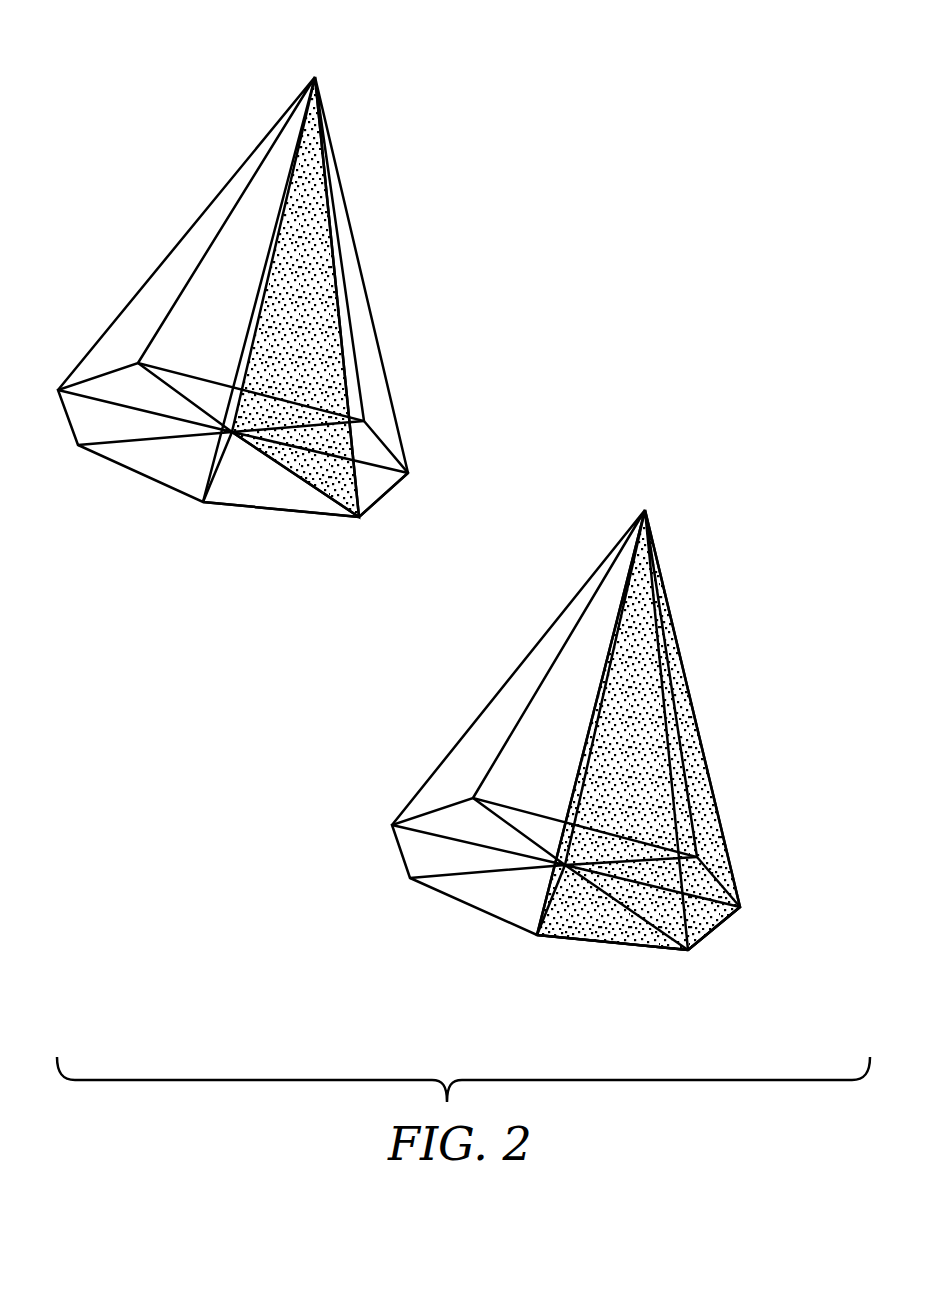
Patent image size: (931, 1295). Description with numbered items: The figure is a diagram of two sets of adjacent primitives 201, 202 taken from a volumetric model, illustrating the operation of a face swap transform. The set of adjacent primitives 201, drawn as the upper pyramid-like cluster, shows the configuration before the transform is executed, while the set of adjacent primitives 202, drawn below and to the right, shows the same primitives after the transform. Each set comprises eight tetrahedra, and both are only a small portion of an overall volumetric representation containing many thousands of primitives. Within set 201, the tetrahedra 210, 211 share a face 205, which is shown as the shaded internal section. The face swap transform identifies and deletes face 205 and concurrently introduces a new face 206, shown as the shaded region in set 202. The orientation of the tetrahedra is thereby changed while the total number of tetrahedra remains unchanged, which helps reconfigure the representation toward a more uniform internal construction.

The set of adjacent primitives 201 is at (227, 134).
The set of adjacent primitives 202 is at (699, 602).
The face 205 is at (362, 541).
The face 206 is at (496, 940).
The tetrahedron 210 is at (278, 523).
The tetrahedron 211 is at (409, 499).